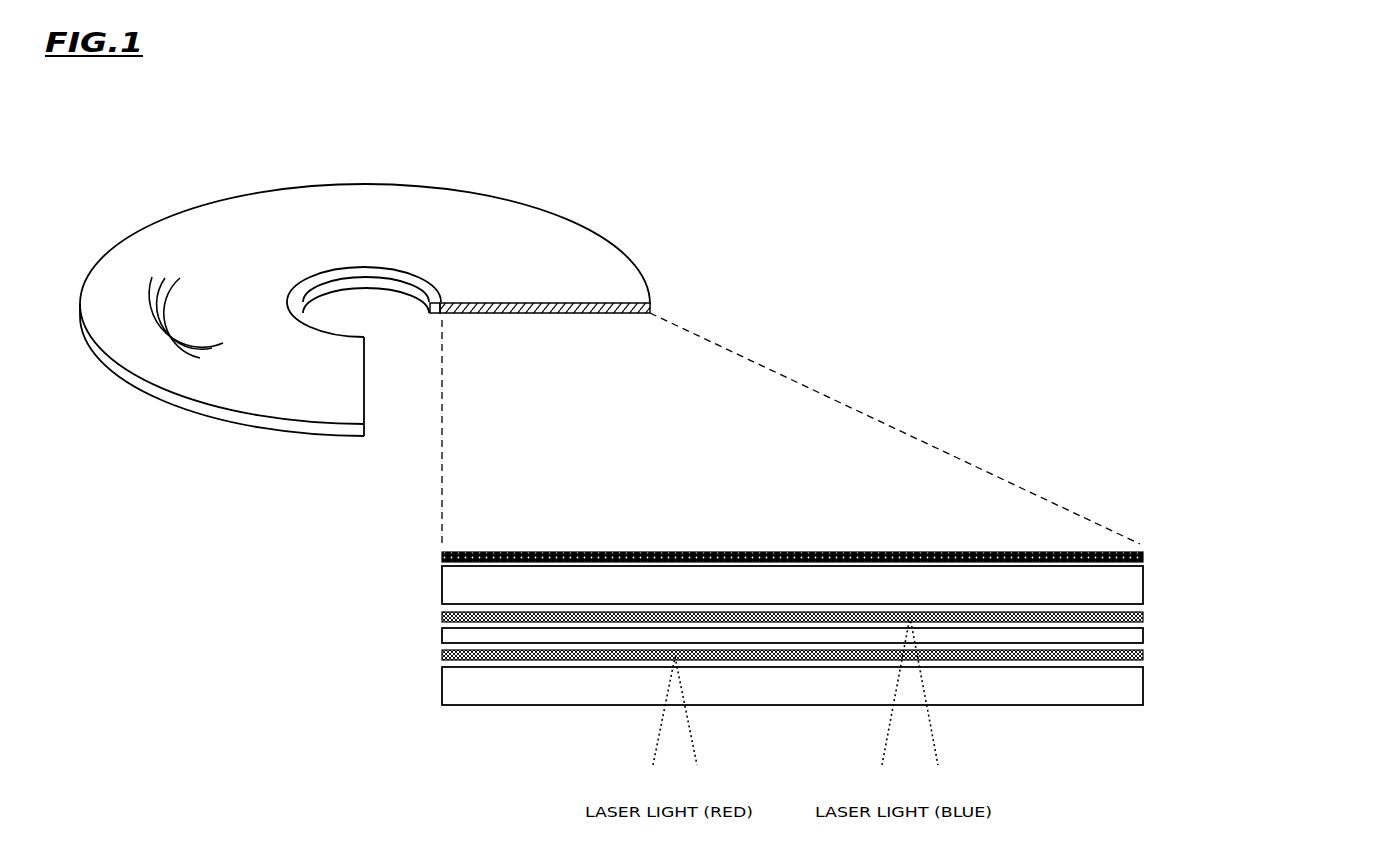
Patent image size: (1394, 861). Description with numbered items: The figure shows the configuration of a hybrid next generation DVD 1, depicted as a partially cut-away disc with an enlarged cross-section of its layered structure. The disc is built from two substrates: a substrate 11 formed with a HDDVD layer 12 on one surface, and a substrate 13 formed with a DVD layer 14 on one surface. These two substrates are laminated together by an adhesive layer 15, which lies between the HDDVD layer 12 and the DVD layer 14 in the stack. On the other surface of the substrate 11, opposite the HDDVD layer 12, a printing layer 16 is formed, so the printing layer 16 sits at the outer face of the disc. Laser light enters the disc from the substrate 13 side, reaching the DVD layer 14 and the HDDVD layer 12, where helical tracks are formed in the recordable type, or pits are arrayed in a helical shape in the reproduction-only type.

The hybrid next generation DVD 1 is at (555, 252).
The substrate 11 is at (1154, 585).
The HDDVD layer 12 is at (430, 617).
The substrate 13 is at (1154, 686).
The DVD layer 14 is at (430, 655).
The adhesive layer 15 is at (1154, 635).
The printing layer 16 is at (922, 513).